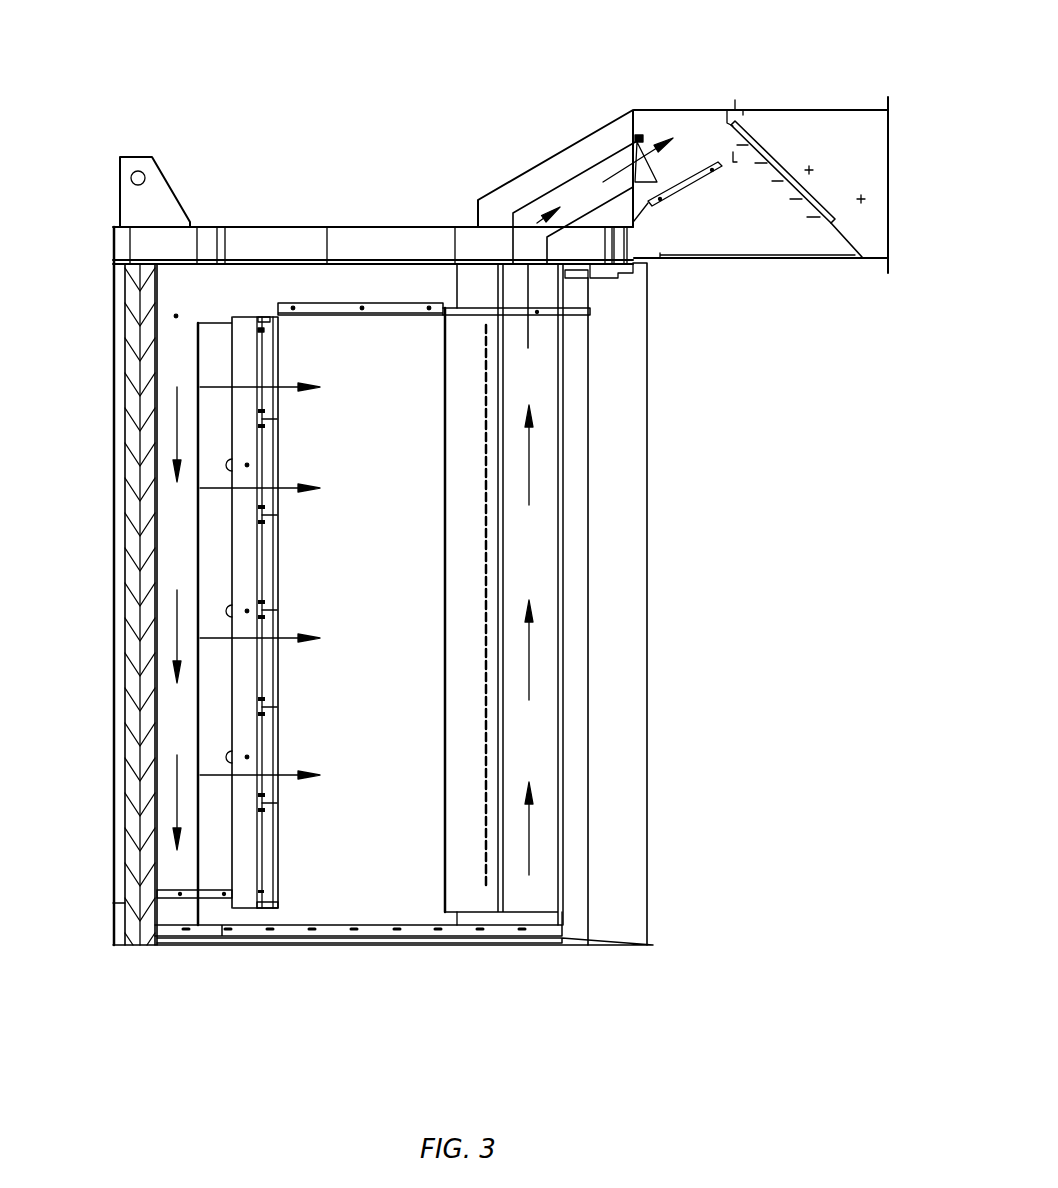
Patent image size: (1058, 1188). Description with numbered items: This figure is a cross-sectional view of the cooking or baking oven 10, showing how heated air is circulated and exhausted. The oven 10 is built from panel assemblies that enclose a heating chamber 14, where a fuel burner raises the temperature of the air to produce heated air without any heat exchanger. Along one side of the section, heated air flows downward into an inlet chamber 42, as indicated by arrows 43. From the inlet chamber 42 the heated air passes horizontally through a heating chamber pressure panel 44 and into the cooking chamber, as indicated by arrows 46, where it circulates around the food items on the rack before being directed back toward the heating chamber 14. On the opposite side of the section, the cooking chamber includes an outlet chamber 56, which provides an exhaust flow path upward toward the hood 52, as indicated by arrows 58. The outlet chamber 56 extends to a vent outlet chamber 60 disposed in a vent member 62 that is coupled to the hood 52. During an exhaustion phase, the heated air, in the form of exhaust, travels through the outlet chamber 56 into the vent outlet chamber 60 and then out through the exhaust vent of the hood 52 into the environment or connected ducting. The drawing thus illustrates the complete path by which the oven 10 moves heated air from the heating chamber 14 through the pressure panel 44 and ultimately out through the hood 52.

The cooking or baking oven 10 is at (708, 622).
The heating chamber 14 is at (383, 702).
The inlet chamber 42 is at (155, 417).
The arrows 43 is at (177, 772).
The heating chamber pressure panel 44 is at (217, 353).
The arrows 46 is at (287, 378).
The hood 52 is at (898, 155).
The outlet chamber 56 is at (534, 908).
The arrows 58 is at (529, 462).
The vent outlet chamber 60 is at (552, 165).
The vent member 62 is at (618, 132).